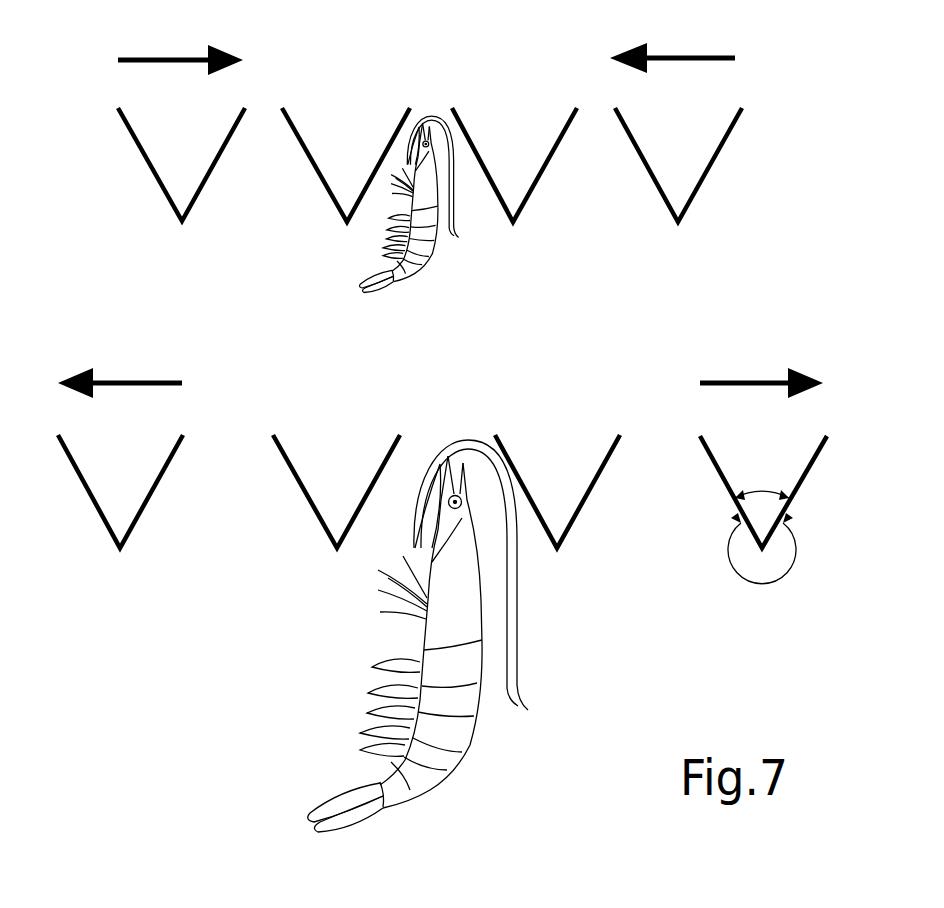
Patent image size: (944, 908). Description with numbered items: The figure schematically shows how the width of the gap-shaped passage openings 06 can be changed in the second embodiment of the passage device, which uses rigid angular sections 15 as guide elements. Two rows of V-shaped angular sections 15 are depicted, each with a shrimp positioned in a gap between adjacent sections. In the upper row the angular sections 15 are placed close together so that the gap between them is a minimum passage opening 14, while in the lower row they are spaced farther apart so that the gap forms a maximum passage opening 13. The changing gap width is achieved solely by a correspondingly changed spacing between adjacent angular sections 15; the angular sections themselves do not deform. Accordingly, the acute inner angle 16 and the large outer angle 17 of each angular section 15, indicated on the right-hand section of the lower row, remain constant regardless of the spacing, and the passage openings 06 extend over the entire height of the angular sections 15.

The passage openings 06 is at (427, 107).
The maximum passage opening 13 is at (220, 432).
The minimum passage opening 14 is at (268, 102).
The angular sections 15 is at (303, 160).
The inner angle 16 is at (768, 487).
The outer angle 17 is at (797, 546).